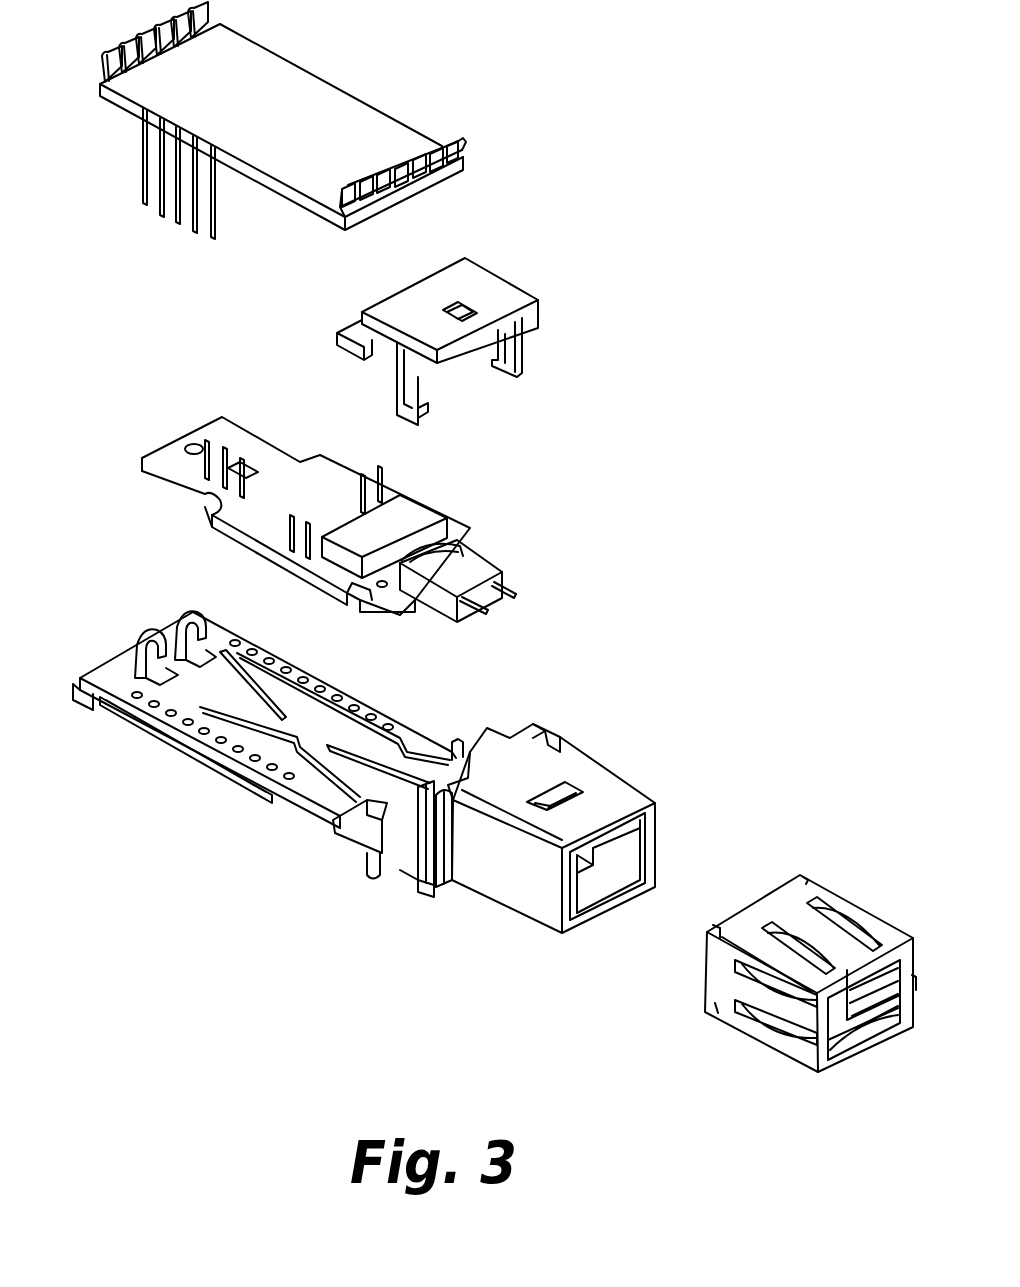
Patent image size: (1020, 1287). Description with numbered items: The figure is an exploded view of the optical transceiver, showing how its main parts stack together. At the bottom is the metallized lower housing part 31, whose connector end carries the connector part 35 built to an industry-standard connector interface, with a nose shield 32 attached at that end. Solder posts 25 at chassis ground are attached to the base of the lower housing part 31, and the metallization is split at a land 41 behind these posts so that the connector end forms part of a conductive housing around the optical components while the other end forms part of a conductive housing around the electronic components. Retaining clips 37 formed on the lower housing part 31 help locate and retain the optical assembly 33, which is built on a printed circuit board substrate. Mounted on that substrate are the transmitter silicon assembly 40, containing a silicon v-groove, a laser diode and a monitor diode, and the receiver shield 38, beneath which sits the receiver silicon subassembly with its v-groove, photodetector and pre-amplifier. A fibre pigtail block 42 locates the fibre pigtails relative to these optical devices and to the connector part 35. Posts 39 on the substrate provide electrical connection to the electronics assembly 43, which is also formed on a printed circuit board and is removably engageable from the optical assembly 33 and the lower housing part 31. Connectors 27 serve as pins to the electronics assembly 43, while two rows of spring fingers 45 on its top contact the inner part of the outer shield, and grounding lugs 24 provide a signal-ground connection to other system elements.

The grounding lugs 24 is at (554, 303).
The solder posts 25 is at (377, 884).
The connectors 27 is at (133, 189).
The lower housing part 31 is at (180, 776).
The nose shield 32 is at (849, 879).
The optical assembly 33 is at (399, 467).
The connector part 35 is at (614, 764).
The retaining clips 37 is at (126, 631).
The receiver shield 38 is at (446, 503).
The posts 39 is at (196, 465).
The transmitter silicon assembly 40 is at (240, 454).
The land 41 is at (349, 856).
The fibre pigtail block 42 is at (504, 563).
The electronics assembly 43 is at (486, 150).
The spring fingers 45 is at (239, 15).